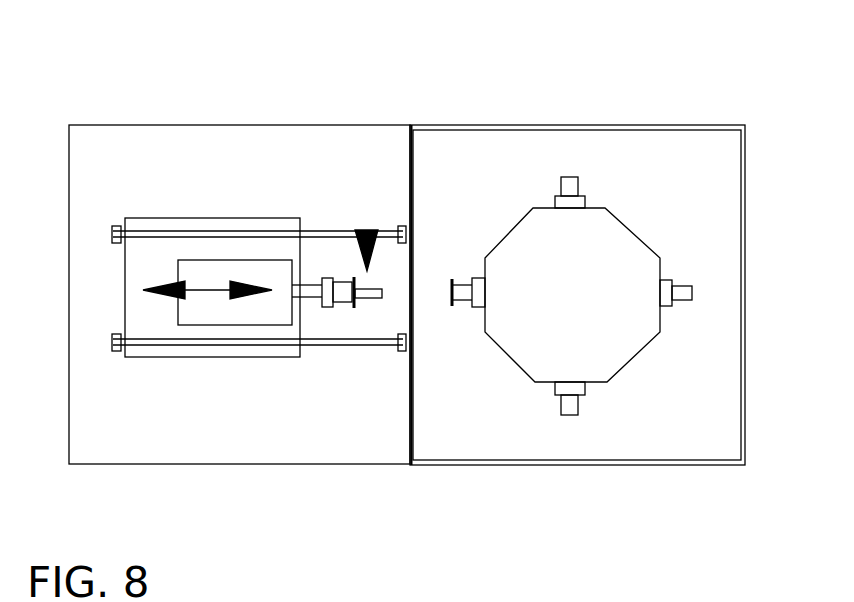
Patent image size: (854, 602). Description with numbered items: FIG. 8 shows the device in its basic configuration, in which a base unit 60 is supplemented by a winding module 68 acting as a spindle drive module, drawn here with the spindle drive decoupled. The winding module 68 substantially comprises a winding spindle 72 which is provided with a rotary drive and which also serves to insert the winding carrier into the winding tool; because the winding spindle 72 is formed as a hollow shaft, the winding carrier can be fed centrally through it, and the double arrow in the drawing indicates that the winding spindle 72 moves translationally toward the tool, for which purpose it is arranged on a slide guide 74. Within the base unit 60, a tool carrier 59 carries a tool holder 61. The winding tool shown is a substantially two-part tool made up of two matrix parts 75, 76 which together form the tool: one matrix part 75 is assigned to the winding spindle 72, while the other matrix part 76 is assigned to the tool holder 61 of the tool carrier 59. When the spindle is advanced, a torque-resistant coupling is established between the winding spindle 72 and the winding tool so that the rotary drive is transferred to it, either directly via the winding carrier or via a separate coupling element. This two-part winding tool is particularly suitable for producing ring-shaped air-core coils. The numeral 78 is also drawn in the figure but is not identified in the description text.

The winding module 68 is at (263, 160).
The winding spindle 72 is at (272, 277).
The winding tool 74 is at (366, 230).
The matrix part 75 is at (352, 300).
The pin 78 is at (373, 300).
The tool carrier 59 is at (527, 258).
The base unit 60 is at (623, 140).
The tool holder 61 is at (472, 278).
The matrix part 76 is at (451, 287).